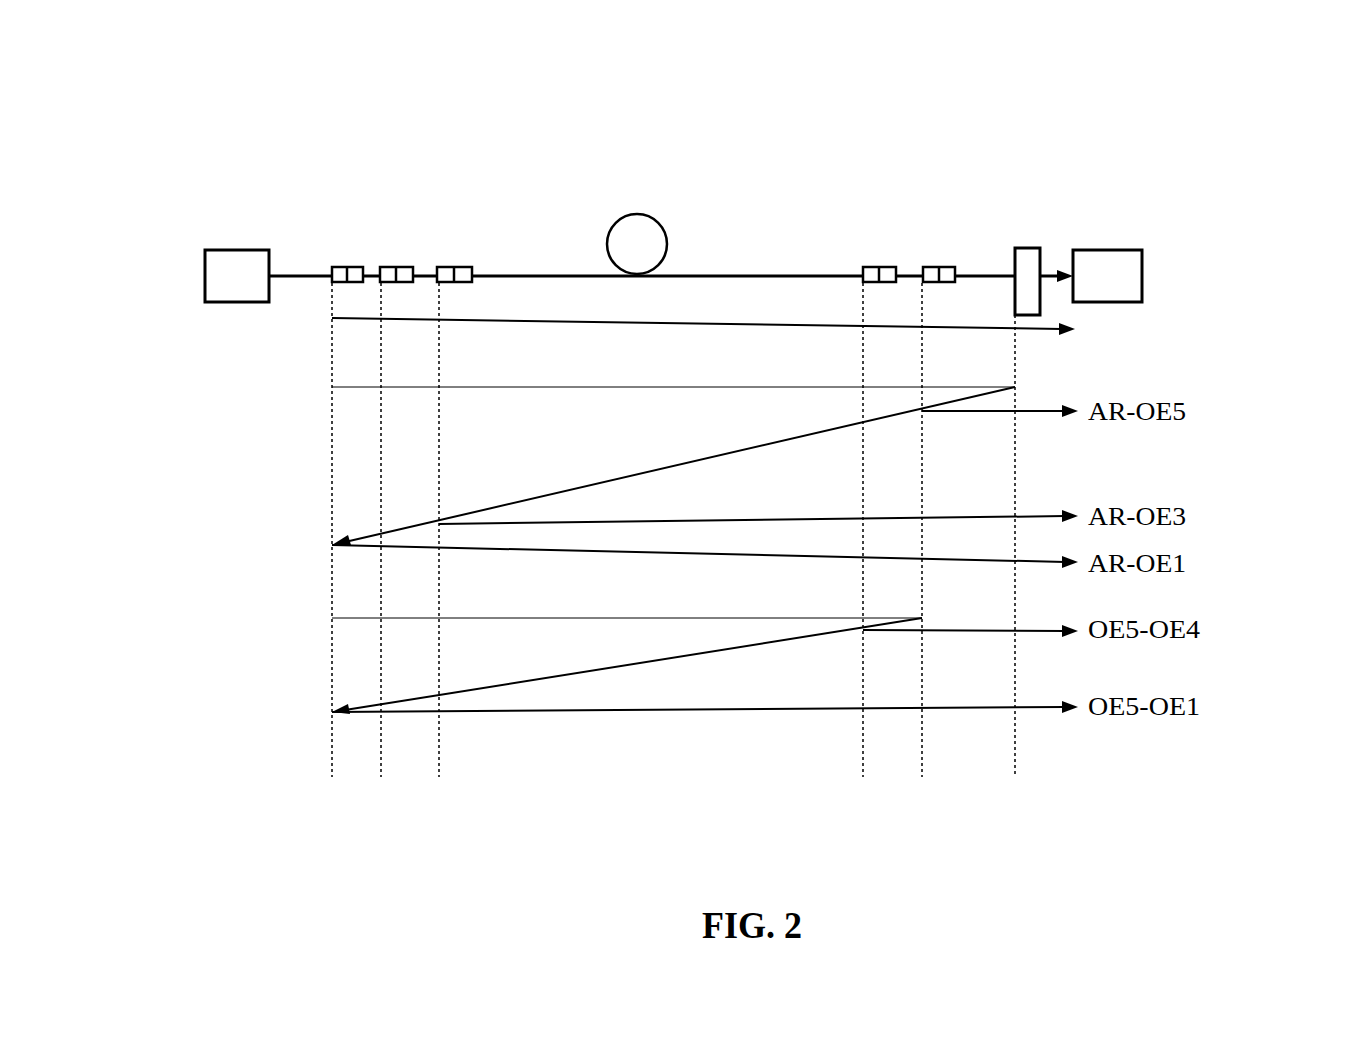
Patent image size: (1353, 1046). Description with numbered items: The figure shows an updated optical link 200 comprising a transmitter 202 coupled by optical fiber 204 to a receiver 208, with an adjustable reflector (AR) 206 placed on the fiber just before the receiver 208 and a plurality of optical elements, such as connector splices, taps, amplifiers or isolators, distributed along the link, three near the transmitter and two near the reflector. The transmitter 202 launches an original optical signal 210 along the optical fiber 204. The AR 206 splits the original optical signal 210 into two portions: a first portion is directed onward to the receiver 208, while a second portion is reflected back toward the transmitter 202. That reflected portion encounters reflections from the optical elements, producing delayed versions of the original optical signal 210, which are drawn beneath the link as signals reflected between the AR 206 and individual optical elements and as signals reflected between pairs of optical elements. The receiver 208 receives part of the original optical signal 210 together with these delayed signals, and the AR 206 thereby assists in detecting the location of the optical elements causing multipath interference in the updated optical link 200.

The updated optical link 200 is at (139, 88).
The transmitter 202 is at (231, 247).
The optical fiber 204 is at (537, 266).
The adjustable reflector (AR) 206 is at (1031, 240).
The receiver 208 is at (1150, 265).
The original optical signal 210 is at (820, 350).